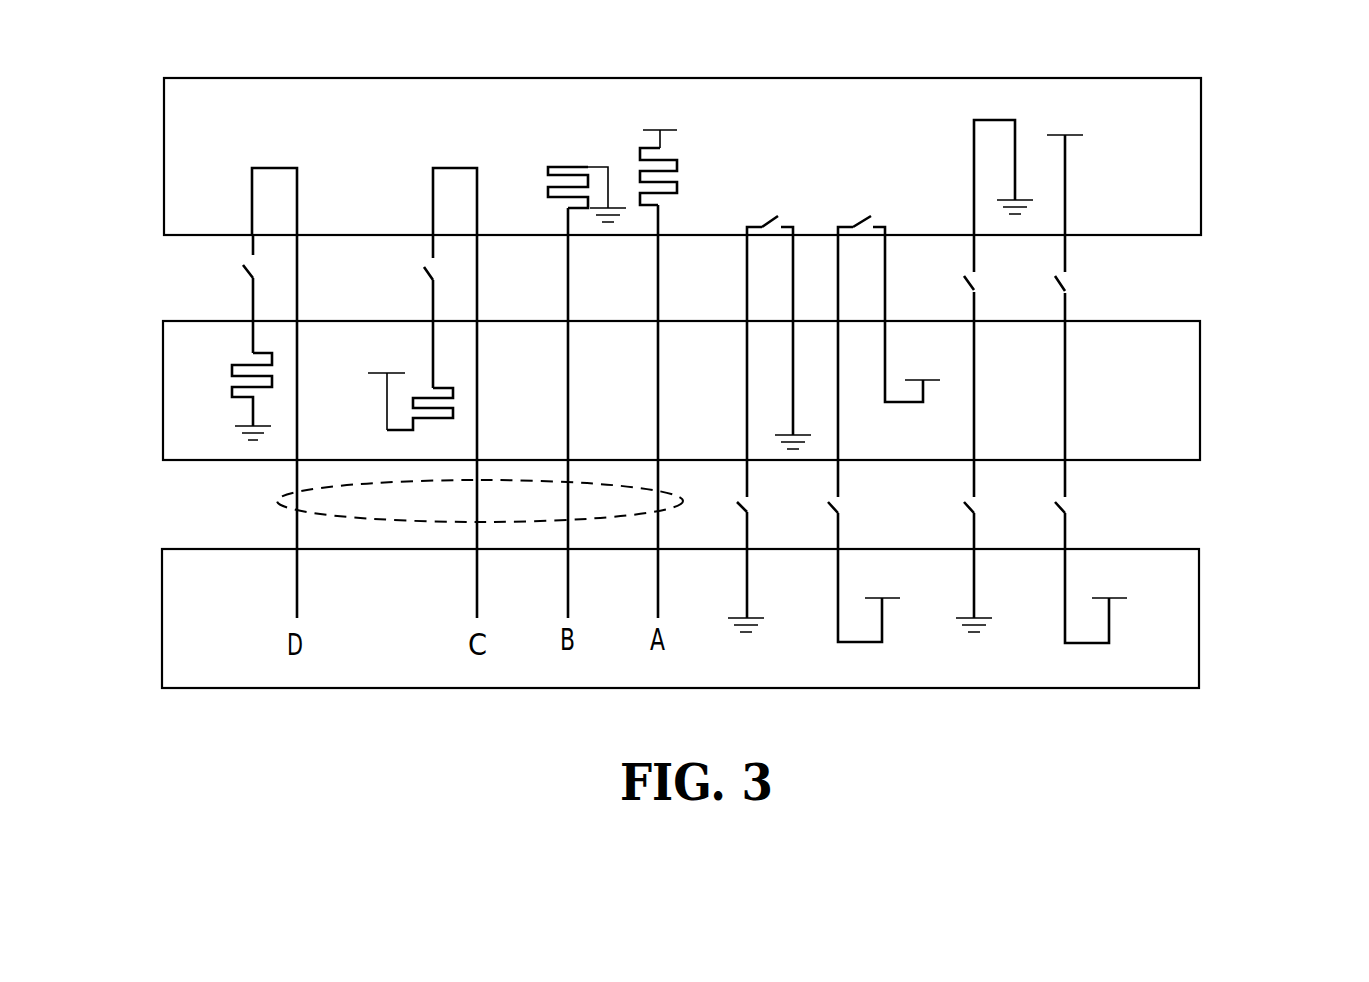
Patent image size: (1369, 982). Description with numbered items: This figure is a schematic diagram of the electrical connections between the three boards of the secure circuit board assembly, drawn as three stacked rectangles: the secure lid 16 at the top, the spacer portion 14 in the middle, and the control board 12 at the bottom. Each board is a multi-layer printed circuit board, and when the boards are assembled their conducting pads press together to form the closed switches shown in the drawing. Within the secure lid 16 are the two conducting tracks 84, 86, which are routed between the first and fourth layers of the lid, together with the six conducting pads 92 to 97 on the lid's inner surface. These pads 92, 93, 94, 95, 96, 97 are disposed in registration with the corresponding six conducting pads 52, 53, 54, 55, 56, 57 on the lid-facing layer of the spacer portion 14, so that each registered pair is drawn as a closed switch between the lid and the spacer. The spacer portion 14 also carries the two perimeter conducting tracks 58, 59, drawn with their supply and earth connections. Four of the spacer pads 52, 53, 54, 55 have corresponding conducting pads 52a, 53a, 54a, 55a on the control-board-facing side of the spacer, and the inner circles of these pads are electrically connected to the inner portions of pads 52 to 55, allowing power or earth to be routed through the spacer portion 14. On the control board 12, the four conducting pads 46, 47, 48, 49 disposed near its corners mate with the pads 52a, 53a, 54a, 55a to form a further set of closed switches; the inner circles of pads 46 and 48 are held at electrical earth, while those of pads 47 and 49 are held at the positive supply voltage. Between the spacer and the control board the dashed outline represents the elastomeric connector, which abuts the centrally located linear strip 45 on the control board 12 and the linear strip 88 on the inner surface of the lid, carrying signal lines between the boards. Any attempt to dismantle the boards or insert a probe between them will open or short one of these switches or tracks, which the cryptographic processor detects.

The control board 12 is at (1200, 567).
The spacer portion 14 is at (1200, 350).
The secure lid 16 is at (1201, 103).
The linear strip 45 is at (406, 503).
The linear strip 88 is at (277, 502).
The conducting pad 46 is at (1007, 521).
The conducting pad 47 is at (1133, 566).
The conducting pad 48 is at (713, 520).
The conducting pad 49 is at (887, 550).
The conducting pad 52 is at (1009, 289).
The conducting pad 53 is at (1114, 301).
The conducting pad 54 is at (897, 315).
The conducting pad 55 is at (801, 300).
The conducting pad 56 is at (374, 311).
The conducting pad 57 is at (179, 294).
The perimeter conducting track 58 is at (433, 431).
The perimeter conducting track 59 is at (232, 382).
The conducting track 84 is at (677, 162).
The conducting track 86 is at (570, 165).
The conducting pad 92 is at (983, 283).
The conducting pad 93 is at (1072, 279).
The conducting pad 94 is at (863, 213).
The conducting pad 95 is at (770, 213).
The conducting pad 96 is at (424, 270).
The conducting pad 97 is at (243, 268).
The conducting pad 52a is at (983, 503).
The conducting pad 53a is at (1072, 503).
The conducting pad 54a is at (725, 498).
The conducting pad 55a is at (905, 508).